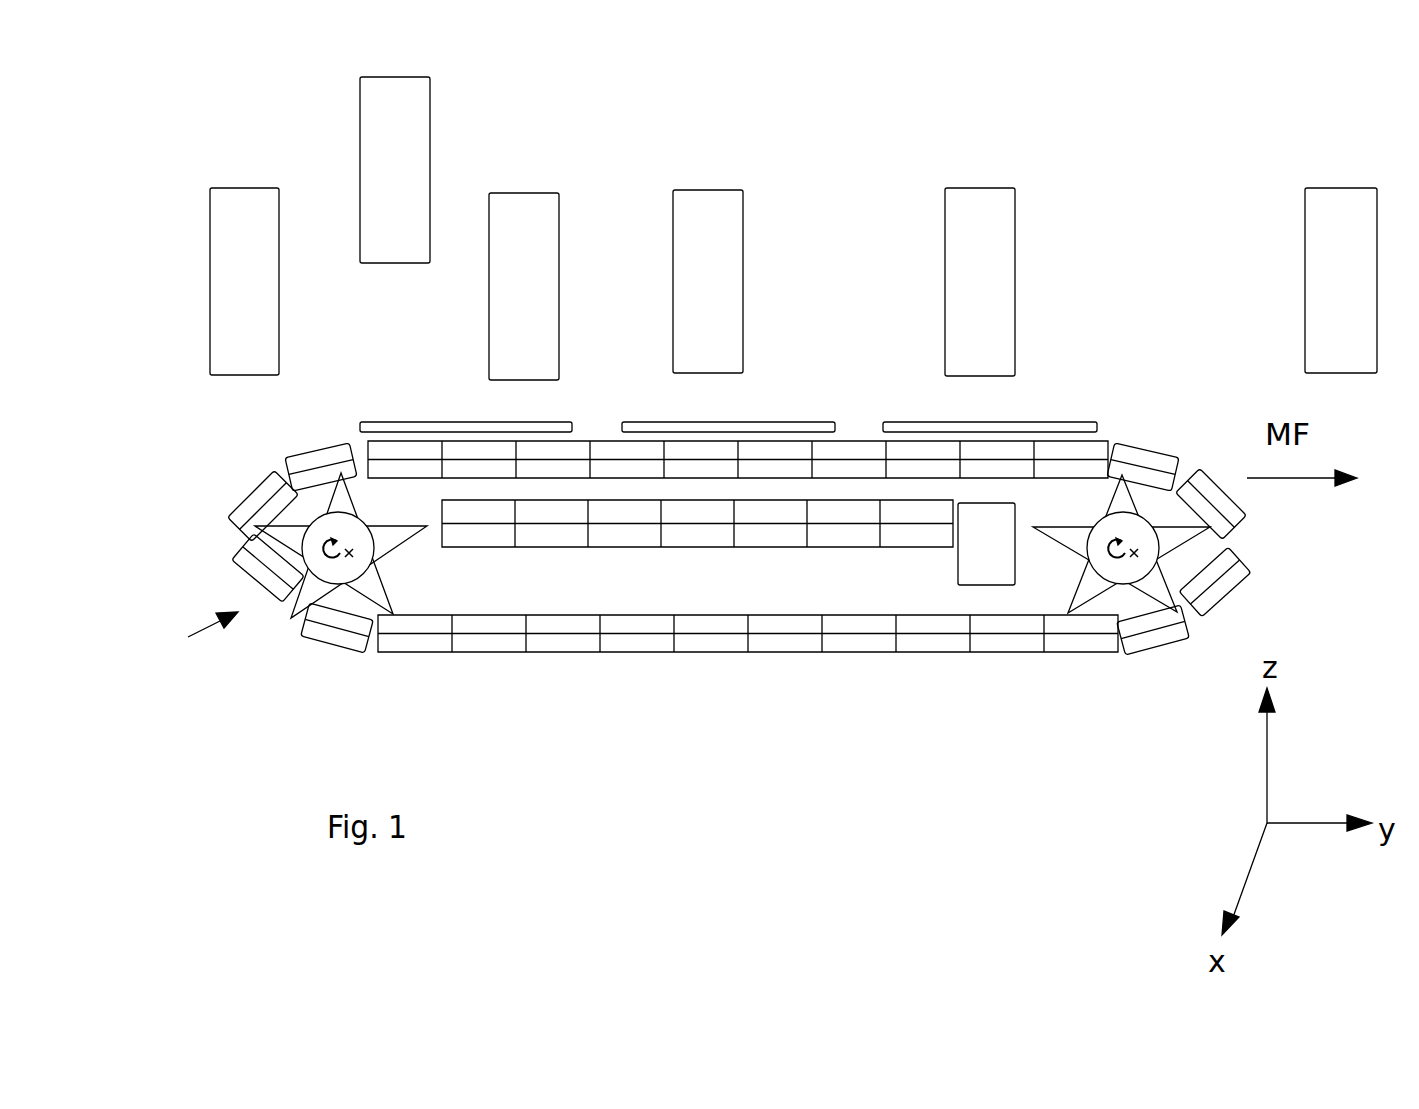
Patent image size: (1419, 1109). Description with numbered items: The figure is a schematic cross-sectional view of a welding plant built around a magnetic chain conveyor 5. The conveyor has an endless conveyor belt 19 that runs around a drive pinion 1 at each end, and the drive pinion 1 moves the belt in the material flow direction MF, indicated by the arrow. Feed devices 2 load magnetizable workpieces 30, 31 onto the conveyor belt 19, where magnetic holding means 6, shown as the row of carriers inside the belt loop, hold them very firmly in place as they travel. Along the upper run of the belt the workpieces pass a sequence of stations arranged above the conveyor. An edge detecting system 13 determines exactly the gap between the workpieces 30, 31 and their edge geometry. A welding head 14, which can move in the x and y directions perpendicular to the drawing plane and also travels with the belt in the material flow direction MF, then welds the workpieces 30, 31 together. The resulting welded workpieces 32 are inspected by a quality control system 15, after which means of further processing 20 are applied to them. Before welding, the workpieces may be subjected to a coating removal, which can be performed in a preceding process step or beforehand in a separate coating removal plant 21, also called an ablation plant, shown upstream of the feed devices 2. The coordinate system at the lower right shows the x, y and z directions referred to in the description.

The drive pinion 1 is at (335, 576).
The feed device 2 is at (257, 279).
The magnetic chain conveyor 5 is at (190, 643).
The magnetic holding means 6 is at (618, 537).
The edge detecting system 13 is at (531, 283).
The welding head 14 is at (703, 315).
The quality control system 15 is at (980, 267).
The endless conveyor belt 19 is at (275, 472).
The means of further processing 20 is at (1333, 292).
The coating removal plant 21 is at (406, 165).
The magnetizable workpiece 30 is at (609, 365).
The magnetizable workpiece 31 is at (727, 425).
The welded workpiece 32 is at (1017, 423).